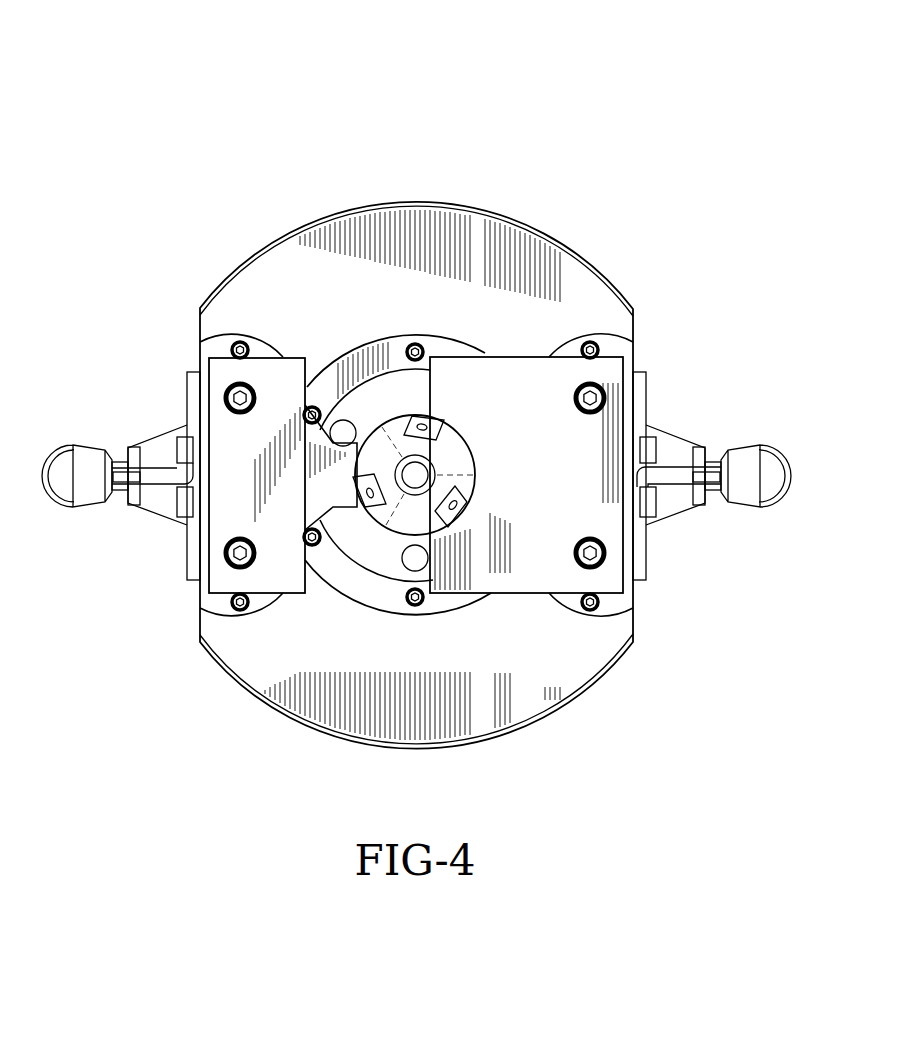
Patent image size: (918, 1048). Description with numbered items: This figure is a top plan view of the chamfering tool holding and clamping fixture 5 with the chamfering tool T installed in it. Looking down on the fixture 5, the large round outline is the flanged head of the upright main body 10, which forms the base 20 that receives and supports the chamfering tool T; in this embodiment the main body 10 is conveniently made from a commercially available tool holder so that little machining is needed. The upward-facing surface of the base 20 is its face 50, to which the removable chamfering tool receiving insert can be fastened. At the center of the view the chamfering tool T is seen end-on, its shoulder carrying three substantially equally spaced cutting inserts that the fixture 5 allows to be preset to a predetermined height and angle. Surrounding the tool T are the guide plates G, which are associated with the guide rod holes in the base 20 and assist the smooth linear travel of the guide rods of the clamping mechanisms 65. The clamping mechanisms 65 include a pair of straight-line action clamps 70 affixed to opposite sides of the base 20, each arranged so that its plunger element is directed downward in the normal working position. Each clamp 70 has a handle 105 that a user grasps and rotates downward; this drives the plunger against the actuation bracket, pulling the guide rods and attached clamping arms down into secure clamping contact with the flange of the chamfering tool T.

The chamfering tool holding and clamping fixture 5 is at (160, 104).
The main body 10 is at (214, 692).
The base 20 is at (586, 255).
The face 50 is at (470, 222).
The chamfering tool T is at (338, 395).
The guide plates G is at (614, 348).
The clamping mechanisms 65 is at (77, 428).
The straight-line action clamps 70 is at (716, 496).
The handle 105 is at (72, 490).